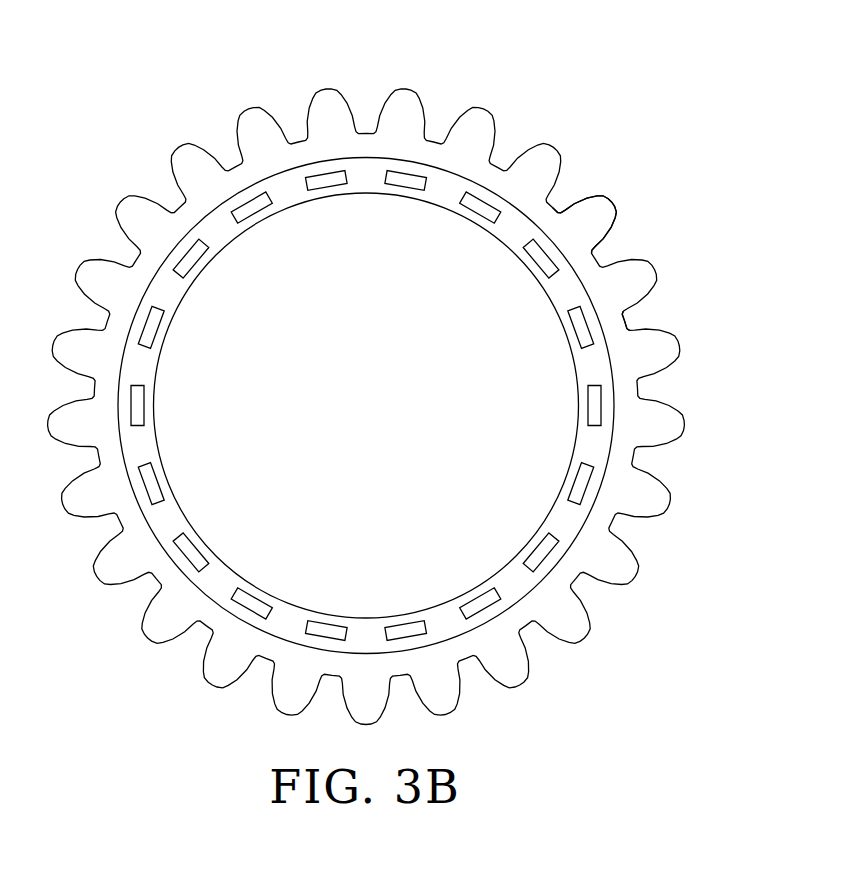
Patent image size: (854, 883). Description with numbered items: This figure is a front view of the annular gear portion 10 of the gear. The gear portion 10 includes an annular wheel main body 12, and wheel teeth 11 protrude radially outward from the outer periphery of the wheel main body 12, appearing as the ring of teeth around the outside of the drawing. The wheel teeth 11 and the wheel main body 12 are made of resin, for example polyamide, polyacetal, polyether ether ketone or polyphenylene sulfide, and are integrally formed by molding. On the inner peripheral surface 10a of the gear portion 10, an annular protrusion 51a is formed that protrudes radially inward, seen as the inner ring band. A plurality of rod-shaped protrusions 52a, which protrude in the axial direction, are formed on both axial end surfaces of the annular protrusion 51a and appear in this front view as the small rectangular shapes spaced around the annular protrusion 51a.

The gear portion 10 is at (652, 176).
The inner peripheral surface 10a is at (517, 228).
The wheel teeth 11 is at (590, 222).
The wheel main body 12 is at (613, 325).
The annular protrusion 51a is at (283, 188).
The rod-shaped protrusions 52a is at (253, 207).